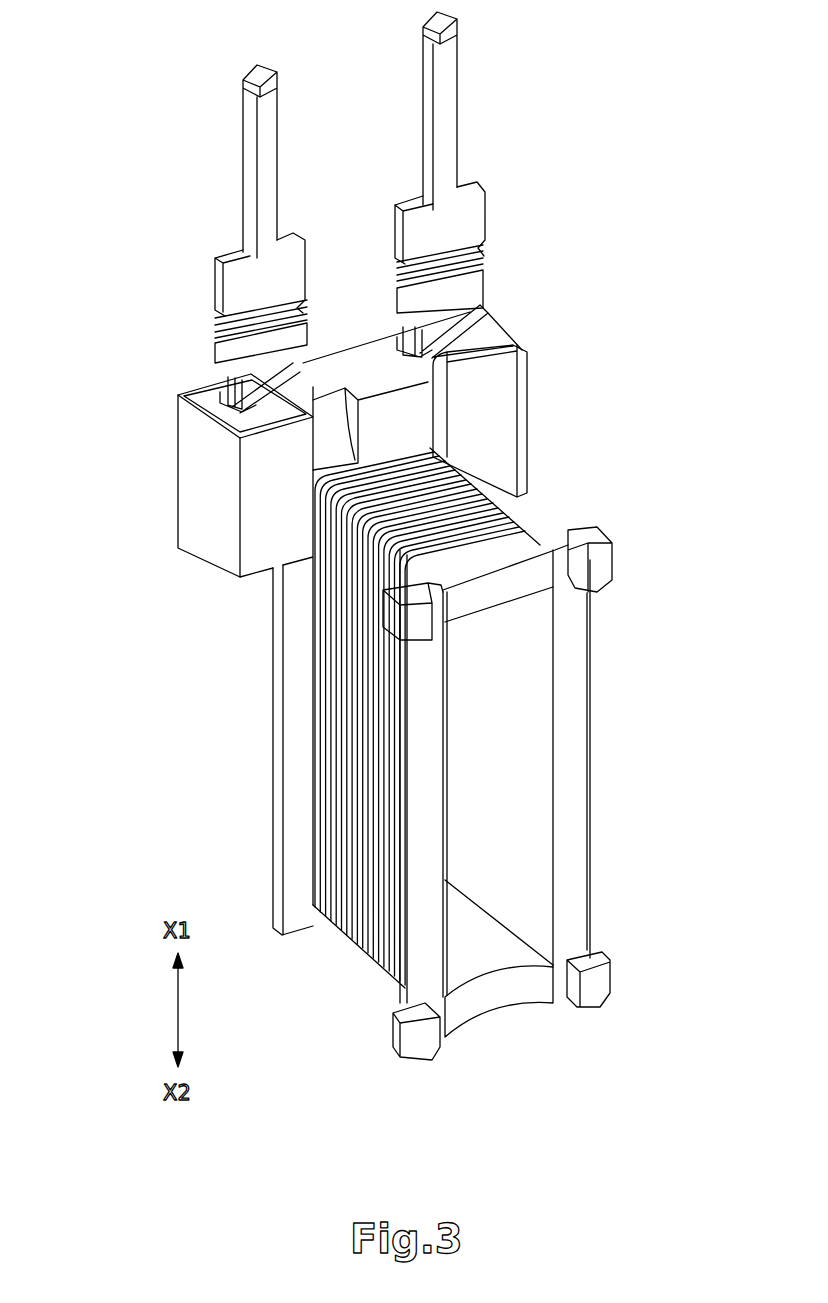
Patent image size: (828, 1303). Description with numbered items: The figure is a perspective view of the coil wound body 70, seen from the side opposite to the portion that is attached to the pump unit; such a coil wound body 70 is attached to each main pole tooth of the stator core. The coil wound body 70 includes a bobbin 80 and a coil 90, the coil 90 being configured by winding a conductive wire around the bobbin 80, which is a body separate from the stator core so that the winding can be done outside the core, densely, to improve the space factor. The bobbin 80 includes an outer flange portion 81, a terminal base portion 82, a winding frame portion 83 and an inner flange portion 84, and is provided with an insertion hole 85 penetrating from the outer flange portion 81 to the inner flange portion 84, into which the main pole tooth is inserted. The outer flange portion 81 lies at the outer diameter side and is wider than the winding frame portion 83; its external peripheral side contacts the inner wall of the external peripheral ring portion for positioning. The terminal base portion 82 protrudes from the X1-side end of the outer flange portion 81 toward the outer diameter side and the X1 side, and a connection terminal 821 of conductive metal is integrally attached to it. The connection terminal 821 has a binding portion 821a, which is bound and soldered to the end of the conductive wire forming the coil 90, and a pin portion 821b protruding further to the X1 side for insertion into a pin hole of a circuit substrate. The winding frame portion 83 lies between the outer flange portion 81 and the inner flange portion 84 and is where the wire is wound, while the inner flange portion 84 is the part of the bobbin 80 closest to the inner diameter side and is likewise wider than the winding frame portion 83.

The coil wound body 70 is at (379, 541).
The bobbin 80 is at (328, 507).
The outer flange portion 81 is at (296, 607).
The terminal base portion 82 is at (324, 254).
The connection terminal 821 is at (324, 212).
The binding portion 821a is at (258, 353).
The pin portion 821b is at (265, 128).
The winding frame portion 83 is at (522, 505).
The inner flange portion 84 is at (577, 752).
The insertion hole 85 is at (471, 950).
The coil 90 is at (543, 773).